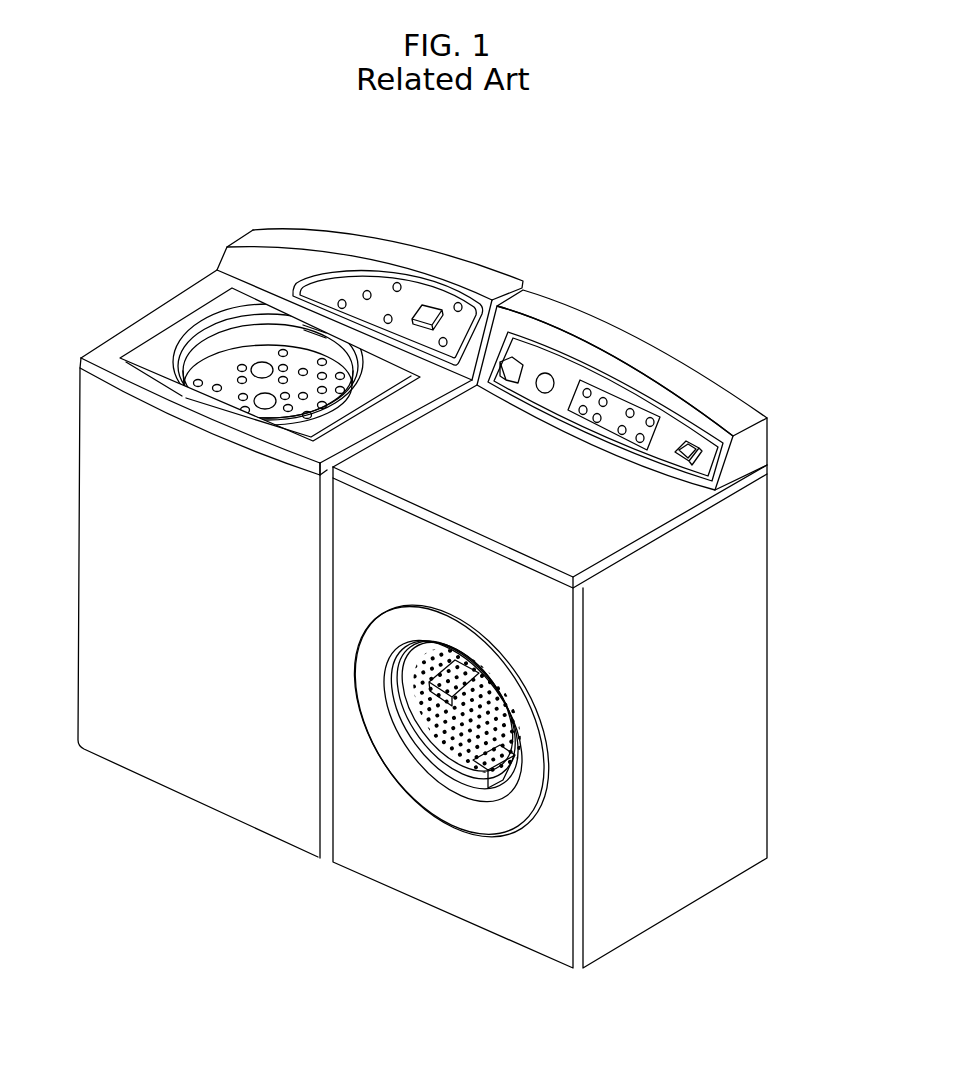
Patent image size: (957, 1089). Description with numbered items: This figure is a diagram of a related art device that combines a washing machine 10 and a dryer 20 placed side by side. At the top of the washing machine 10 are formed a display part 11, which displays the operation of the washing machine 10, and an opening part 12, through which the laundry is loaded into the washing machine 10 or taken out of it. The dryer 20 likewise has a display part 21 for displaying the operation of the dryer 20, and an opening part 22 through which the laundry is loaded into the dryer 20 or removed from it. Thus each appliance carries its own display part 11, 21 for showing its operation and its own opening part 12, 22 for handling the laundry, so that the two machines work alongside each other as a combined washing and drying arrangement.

The washing machine 10 is at (152, 308).
The display part 11 is at (385, 271).
The opening part 12 is at (157, 352).
The dryer 20 is at (766, 553).
The display part 21 is at (583, 365).
The opening part 22 is at (395, 779).